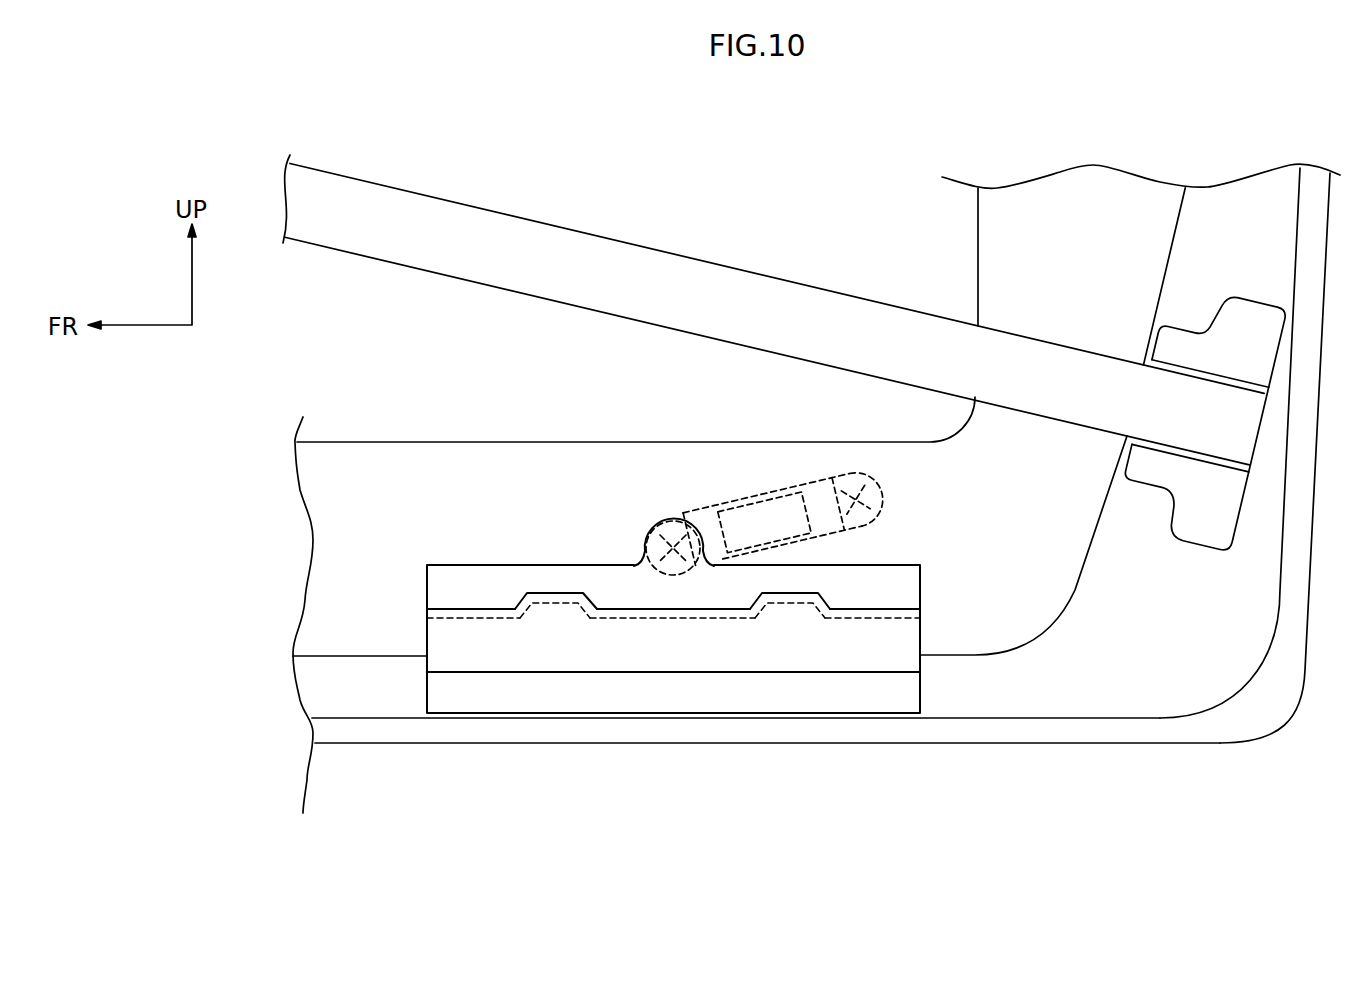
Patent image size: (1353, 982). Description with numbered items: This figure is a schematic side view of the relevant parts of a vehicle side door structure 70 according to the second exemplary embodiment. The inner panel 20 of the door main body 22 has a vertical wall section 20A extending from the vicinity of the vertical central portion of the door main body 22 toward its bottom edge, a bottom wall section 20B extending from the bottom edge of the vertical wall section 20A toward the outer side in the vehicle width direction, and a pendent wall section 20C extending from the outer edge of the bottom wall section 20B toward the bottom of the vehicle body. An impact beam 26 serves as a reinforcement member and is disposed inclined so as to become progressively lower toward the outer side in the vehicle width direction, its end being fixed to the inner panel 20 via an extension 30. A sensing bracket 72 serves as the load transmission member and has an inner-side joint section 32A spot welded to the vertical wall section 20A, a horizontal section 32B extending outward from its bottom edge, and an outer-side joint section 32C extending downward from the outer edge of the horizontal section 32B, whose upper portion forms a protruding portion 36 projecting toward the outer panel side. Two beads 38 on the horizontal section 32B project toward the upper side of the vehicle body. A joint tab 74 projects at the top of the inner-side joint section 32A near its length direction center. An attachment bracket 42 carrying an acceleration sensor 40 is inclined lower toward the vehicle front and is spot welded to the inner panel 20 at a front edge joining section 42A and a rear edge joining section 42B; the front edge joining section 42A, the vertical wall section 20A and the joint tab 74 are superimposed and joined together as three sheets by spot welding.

The inner panel 20 is at (903, 744).
The door main body 22 is at (816, 511).
The vertical wall section 20A is at (377, 457).
The bottom wall section 20B is at (973, 655).
The pendent wall section 20C is at (1042, 703).
The impact beam 26 is at (608, 245).
The extension 30 is at (1195, 547).
The inner-side joint section 32A is at (452, 575).
The horizontal section 32B is at (443, 607).
The outer-side joint section 32C is at (465, 702).
The protruding portion 36 is at (552, 660).
The bead 38 is at (558, 593).
The acceleration sensor 40 is at (733, 510).
The attachment bracket 42 is at (810, 483).
The front edge joining section 42A is at (683, 513).
The rear edge joining section 42B is at (888, 497).
The vehicle side door structure 70 is at (642, 760).
The sensing bracket 72 is at (745, 697).
The joint tab 74 is at (641, 549).